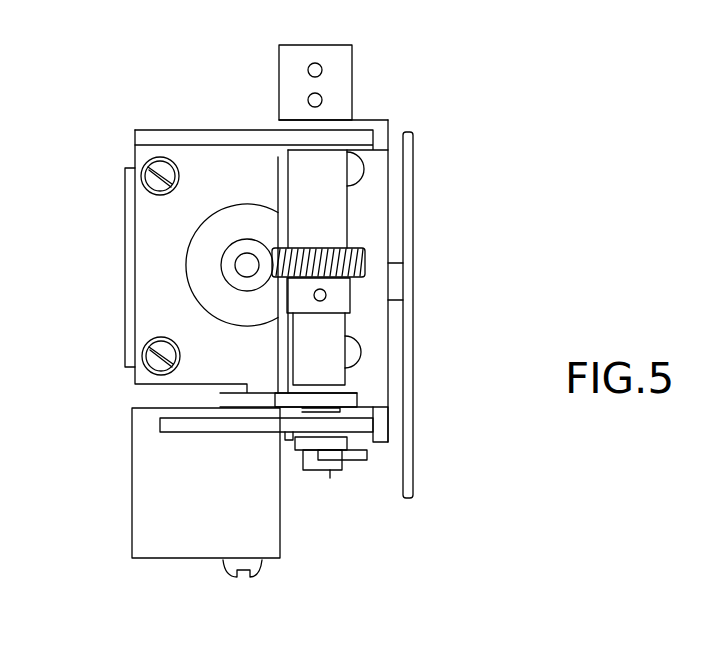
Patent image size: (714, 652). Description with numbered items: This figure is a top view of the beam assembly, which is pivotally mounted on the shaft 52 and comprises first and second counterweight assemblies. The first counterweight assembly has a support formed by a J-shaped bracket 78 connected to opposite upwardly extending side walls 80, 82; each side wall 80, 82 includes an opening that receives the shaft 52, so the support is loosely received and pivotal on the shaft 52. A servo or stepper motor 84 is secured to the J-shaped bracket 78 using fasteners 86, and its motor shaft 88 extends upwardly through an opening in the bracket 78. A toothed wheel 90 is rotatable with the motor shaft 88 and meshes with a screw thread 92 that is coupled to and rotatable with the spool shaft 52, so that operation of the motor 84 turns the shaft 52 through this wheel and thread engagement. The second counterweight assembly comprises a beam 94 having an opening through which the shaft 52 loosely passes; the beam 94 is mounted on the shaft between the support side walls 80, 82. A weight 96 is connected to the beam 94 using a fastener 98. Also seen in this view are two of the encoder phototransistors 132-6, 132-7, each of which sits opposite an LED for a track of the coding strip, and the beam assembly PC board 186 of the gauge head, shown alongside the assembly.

The shaft 52 is at (330, 478).
The J-shaped bracket 78 is at (380, 347).
The side wall 80 is at (363, 422).
The side wall 82 is at (358, 132).
The servo or stepper motor 84 is at (190, 262).
The fasteners 86 is at (143, 180).
The motor shaft 88 is at (247, 262).
The toothed wheel 90 is at (241, 285).
The screw thread 92 is at (365, 258).
The beam 94 is at (352, 398).
The weight 96 is at (168, 535).
The fastener 98 is at (262, 575).
The phototransistor 132-6 is at (308, 100).
The phototransistor 132-7 is at (322, 70).
The beam assembly PC board 186 is at (408, 162).